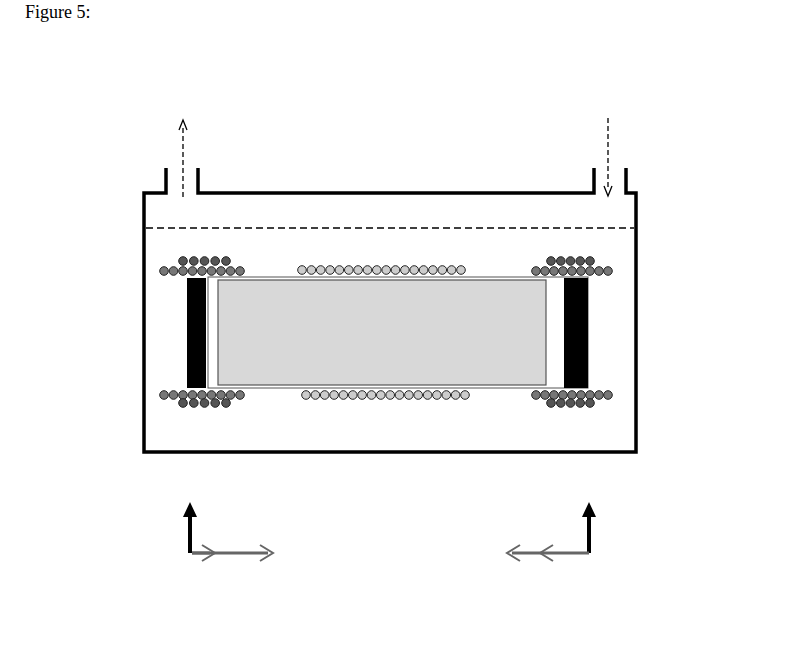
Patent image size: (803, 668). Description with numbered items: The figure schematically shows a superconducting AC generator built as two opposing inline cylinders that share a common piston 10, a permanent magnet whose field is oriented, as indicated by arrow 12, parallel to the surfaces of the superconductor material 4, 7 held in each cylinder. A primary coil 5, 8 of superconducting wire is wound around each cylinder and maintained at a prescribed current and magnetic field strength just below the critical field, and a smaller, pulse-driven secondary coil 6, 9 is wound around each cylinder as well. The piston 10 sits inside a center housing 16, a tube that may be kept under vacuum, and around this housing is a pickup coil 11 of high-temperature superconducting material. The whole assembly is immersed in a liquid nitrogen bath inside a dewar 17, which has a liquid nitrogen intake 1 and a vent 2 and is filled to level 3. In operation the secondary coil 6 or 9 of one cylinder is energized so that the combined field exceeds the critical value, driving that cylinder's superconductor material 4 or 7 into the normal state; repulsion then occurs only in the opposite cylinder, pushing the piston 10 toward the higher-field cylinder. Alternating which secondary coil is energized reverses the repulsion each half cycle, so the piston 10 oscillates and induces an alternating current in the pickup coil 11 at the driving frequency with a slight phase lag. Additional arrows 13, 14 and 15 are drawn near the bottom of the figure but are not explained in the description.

The liquid nitrogen intake 1 is at (627, 175).
The vent 2 is at (164, 168).
The level 3 is at (343, 232).
The superconductor material 4 is at (187, 340).
The primary coil 5 is at (163, 395).
The secondary coil 6 is at (183, 262).
The superconductor material 7 is at (588, 338).
The primary coil 8 is at (612, 393).
The secondary coil 9 is at (593, 262).
The piston 10 is at (273, 357).
The pickup coil 11 is at (390, 262).
The arrow 12 is at (188, 533).
The horizontal direction arrow 13 is at (243, 553).
The short horizontal arrow 14 is at (193, 555).
The right direction arrows 15 is at (588, 555).
The center housing 16 is at (500, 388).
The dewar 17 is at (603, 452).